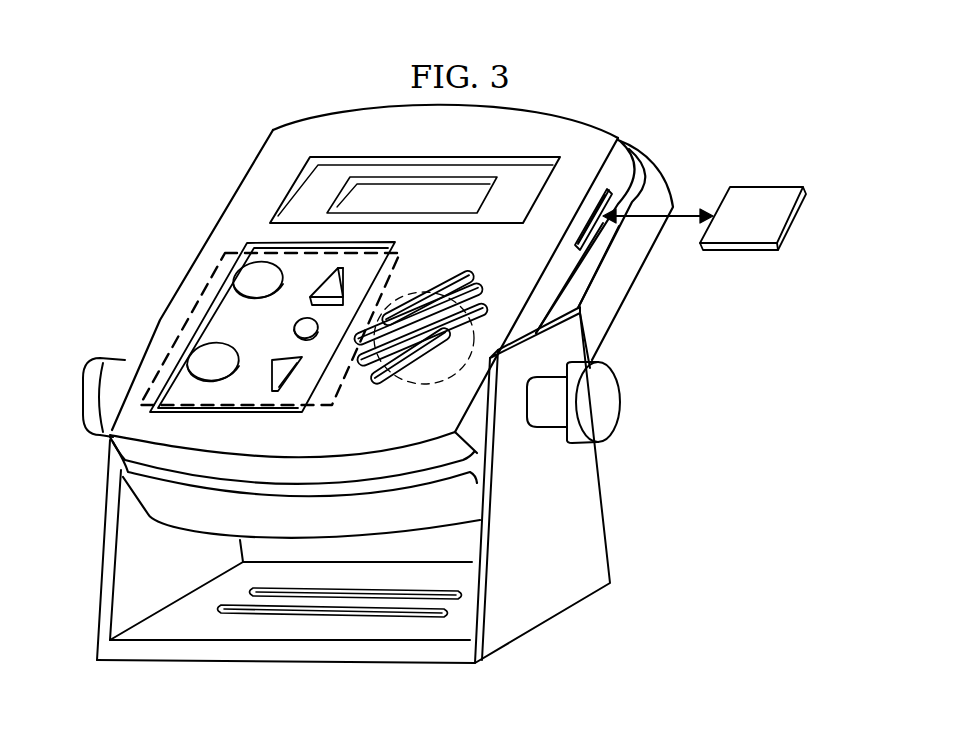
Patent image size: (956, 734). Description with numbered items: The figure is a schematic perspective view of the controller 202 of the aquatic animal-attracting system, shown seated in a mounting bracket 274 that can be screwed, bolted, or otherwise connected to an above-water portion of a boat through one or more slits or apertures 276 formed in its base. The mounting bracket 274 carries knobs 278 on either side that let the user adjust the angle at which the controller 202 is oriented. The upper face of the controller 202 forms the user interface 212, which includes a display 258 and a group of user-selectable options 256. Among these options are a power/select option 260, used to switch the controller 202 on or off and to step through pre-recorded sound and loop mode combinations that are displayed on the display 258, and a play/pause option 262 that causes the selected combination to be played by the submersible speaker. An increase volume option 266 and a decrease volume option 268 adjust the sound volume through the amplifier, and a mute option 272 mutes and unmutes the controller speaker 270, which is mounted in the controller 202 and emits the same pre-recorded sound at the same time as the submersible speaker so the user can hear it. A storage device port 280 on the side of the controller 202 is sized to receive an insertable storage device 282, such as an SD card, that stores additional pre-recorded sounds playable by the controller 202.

The controller 202 is at (265, 78).
The user interface 212 is at (508, 267).
The user-selectable options 256 is at (197, 309).
The display 258 is at (428, 195).
The power/select option 260 is at (253, 283).
The play/pause option 262 is at (207, 357).
The increase volume option 266 is at (345, 288).
The decrease volume option 268 is at (273, 370).
The controller speaker 270 is at (418, 383).
The mute option 272 is at (298, 333).
The mounting bracket 274 is at (604, 535).
The slits or apertures 276 is at (262, 616).
The knobs 278 is at (82, 392).
The storage device port 280 is at (590, 237).
The insertable storage device 282 is at (756, 203).